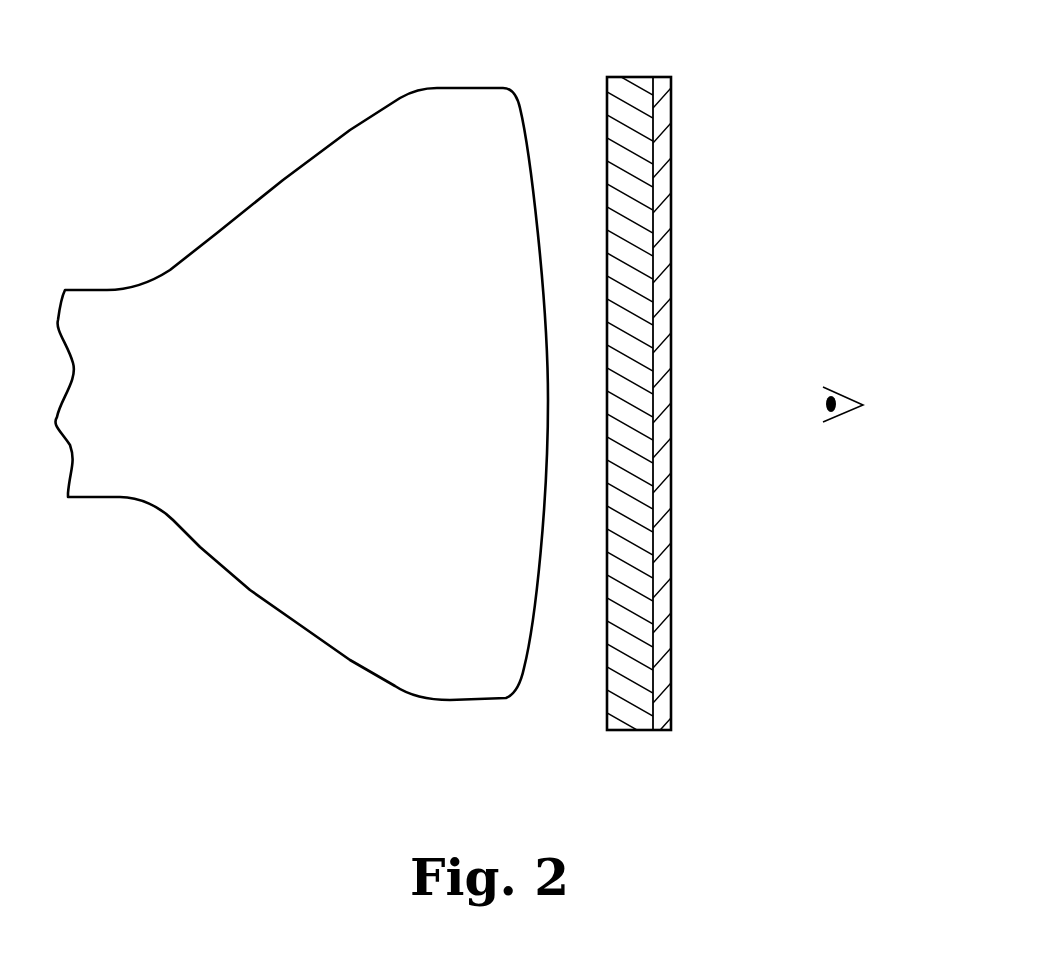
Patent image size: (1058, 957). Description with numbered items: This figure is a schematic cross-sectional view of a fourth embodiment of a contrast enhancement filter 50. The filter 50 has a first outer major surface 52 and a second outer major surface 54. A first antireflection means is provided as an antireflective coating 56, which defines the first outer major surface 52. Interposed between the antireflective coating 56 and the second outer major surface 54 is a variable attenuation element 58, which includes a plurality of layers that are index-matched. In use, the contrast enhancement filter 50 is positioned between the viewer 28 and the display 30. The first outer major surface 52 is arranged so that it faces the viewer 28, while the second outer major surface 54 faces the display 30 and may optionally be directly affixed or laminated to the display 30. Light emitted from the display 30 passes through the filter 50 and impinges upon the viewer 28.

The viewer 28 is at (847, 413).
The display 30 is at (527, 667).
The contrast enhancement filter 50 is at (745, 108).
The first outer major surface 52 is at (672, 289).
The second outer major surface 54 is at (607, 130).
The antireflective coating 56 is at (663, 100).
The variable attenuation element 58 is at (635, 100).